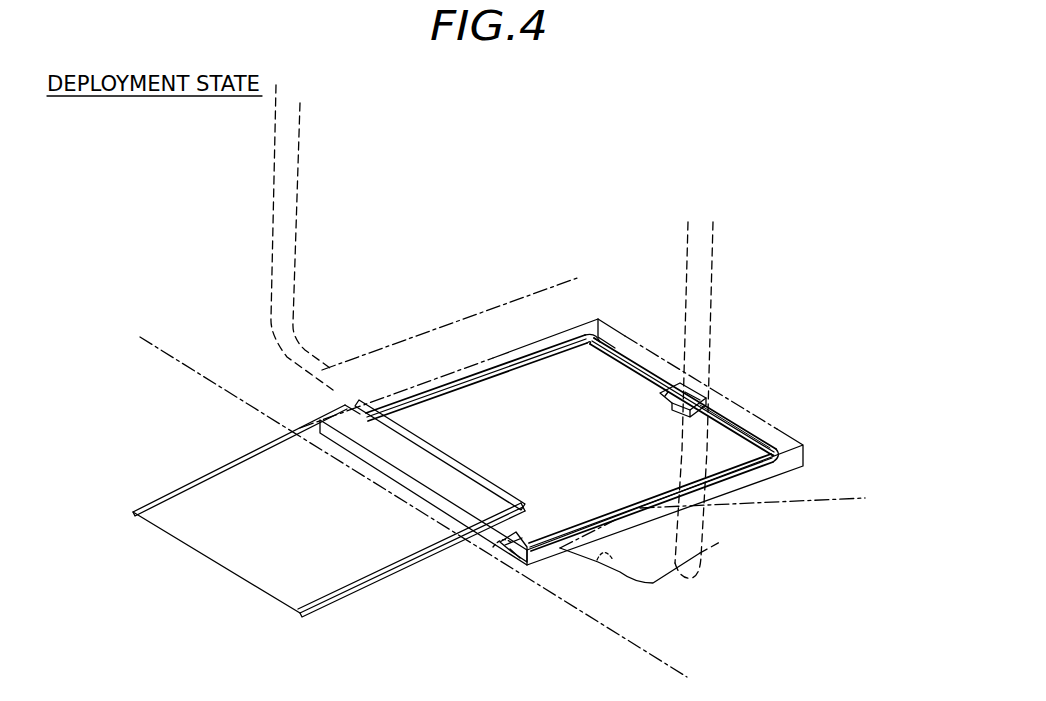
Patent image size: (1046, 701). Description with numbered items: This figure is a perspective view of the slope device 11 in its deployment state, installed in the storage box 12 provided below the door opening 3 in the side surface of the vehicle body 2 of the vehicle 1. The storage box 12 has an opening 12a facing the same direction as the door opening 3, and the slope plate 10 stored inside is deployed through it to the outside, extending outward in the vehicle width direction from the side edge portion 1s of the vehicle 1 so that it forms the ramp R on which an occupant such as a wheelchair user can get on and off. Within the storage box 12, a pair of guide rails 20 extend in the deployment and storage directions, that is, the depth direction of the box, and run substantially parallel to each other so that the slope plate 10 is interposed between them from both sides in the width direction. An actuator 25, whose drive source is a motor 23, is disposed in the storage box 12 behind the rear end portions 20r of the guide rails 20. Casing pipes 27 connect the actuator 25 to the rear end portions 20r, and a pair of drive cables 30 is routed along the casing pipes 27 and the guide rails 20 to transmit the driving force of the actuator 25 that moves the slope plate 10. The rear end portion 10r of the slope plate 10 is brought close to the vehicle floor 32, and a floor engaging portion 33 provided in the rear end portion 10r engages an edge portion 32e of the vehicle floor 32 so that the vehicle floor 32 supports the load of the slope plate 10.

The vehicle 1 is at (393, 477).
The side edge portion 1s is at (393, 477).
The vehicle body 2 is at (178, 363).
The door opening 3 is at (272, 320).
The slope plate 10 is at (280, 607).
The rear end portion 10r is at (497, 507).
The slope device 11 is at (199, 610).
The storage box 12 is at (778, 413).
The opening 12a is at (500, 543).
The guide rails 20 is at (493, 358).
The rear end portions 20r is at (590, 328).
The motor 23 is at (663, 397).
The actuator 25 is at (651, 424).
The casing pipes 27 is at (760, 396).
The drive cables 30 is at (753, 427).
The vehicle floor 32 is at (420, 332).
The edge portion 32e is at (612, 567).
The floor engaging portion 33 is at (450, 460).
The ramp R is at (246, 476).